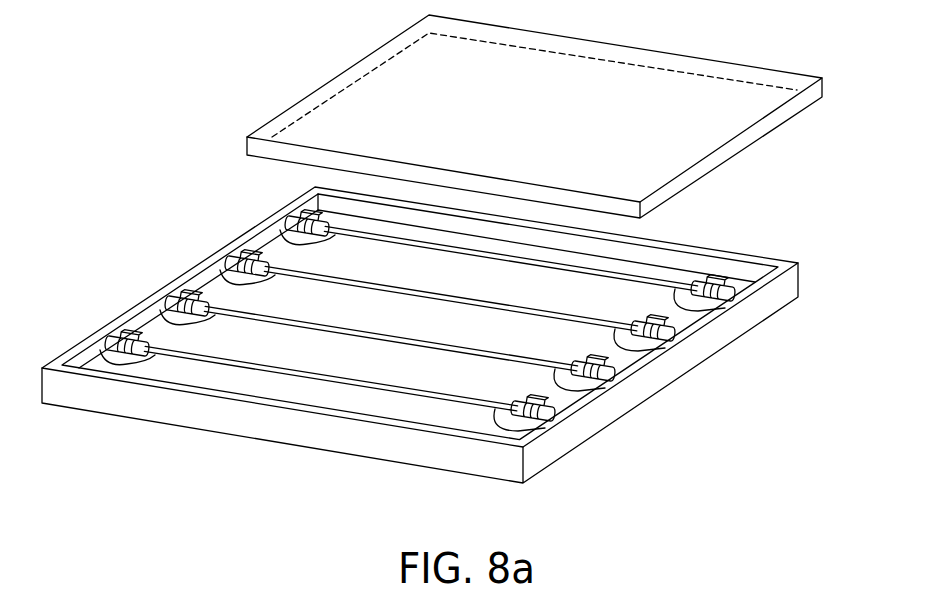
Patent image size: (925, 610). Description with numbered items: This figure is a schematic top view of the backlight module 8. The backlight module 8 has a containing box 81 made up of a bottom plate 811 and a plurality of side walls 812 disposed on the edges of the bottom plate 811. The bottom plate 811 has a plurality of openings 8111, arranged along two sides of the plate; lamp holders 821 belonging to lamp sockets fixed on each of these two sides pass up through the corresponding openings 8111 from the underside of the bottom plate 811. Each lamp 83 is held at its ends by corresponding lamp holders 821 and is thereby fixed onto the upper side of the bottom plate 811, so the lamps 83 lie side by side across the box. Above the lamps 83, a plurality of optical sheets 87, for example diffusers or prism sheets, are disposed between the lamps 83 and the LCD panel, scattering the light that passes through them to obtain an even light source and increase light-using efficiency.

The backlight module 8 is at (165, 65).
The containing box 81 is at (417, 304).
The bottom plate 811 is at (275, 248).
The openings 8111 is at (293, 222).
The side walls 812 is at (333, 203).
The lamp holders 821 is at (550, 402).
The lamps 83 is at (237, 362).
The optical sheets 87 is at (827, 71).